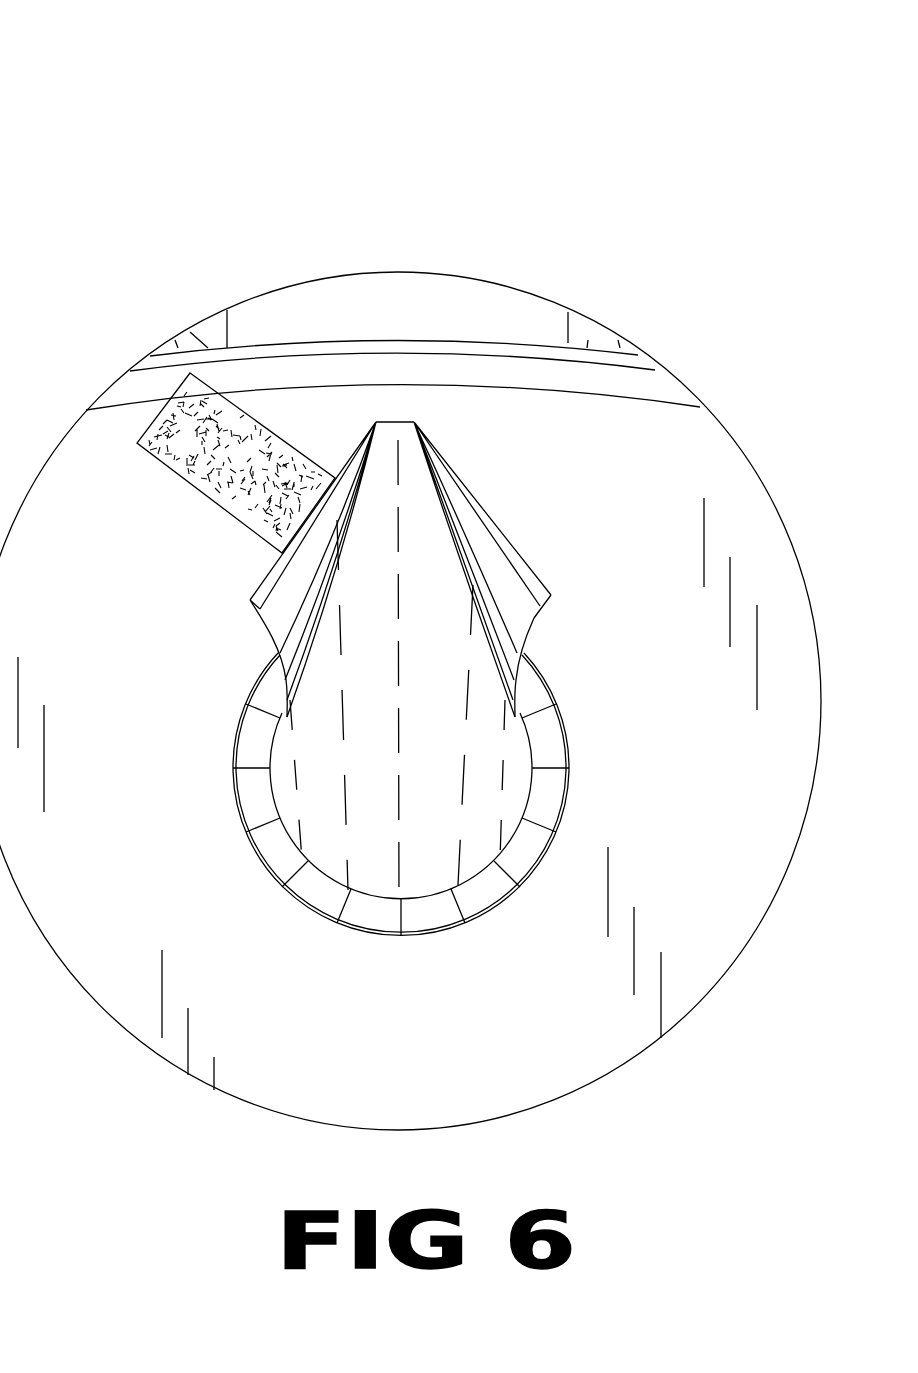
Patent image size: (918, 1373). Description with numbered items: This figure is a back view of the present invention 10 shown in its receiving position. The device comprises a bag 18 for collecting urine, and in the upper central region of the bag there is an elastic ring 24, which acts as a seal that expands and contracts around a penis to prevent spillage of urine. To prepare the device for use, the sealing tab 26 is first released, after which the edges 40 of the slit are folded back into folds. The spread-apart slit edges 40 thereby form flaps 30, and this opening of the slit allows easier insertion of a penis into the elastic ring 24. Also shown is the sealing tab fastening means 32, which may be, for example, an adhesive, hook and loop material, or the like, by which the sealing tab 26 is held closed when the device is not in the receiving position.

The present invention 10 is at (528, 190).
The bag 18 is at (459, 1085).
The elastic ring 24 is at (560, 745).
The sealing tab 26 is at (183, 418).
The flaps 30 is at (490, 580).
The sealing tab fastening means 32 is at (262, 455).
The slit edges 40 is at (250, 598).